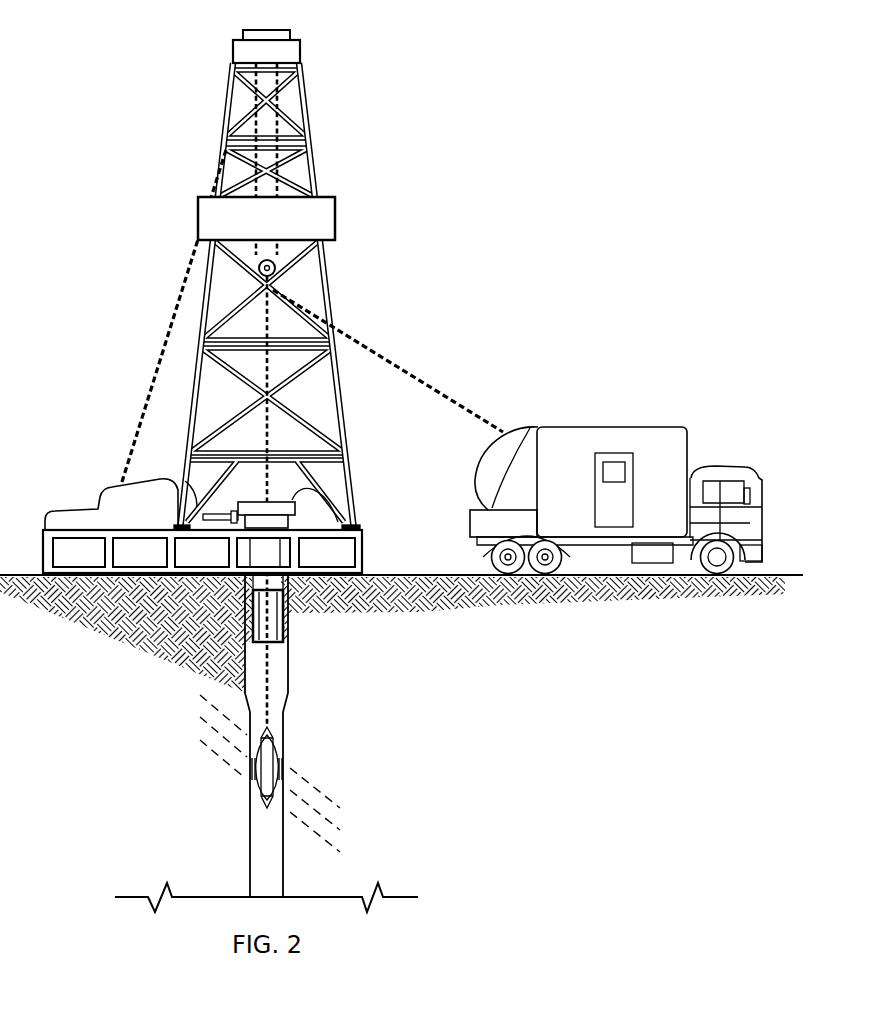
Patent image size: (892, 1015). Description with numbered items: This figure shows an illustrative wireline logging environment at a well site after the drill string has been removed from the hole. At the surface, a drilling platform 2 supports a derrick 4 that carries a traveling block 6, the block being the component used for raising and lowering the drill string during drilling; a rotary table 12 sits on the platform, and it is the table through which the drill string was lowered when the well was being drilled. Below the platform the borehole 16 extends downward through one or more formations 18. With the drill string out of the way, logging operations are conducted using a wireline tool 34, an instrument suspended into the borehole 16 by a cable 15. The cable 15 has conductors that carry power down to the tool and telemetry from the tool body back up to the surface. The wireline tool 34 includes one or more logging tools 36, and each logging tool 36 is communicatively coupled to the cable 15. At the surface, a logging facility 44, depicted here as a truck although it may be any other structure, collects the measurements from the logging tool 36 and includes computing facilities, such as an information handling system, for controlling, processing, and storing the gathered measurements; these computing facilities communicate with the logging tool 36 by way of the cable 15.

The drilling platform 2 is at (363, 553).
The derrick 4 is at (335, 290).
The traveling block 6 is at (266, 260).
The rotary table 12 is at (292, 500).
The cable 15 is at (268, 622).
The borehole 16 is at (283, 683).
The formations 18 is at (346, 808).
The wireline tool 34 is at (266, 753).
The logging tool 36 is at (253, 768).
The logging facility 44 is at (610, 427).